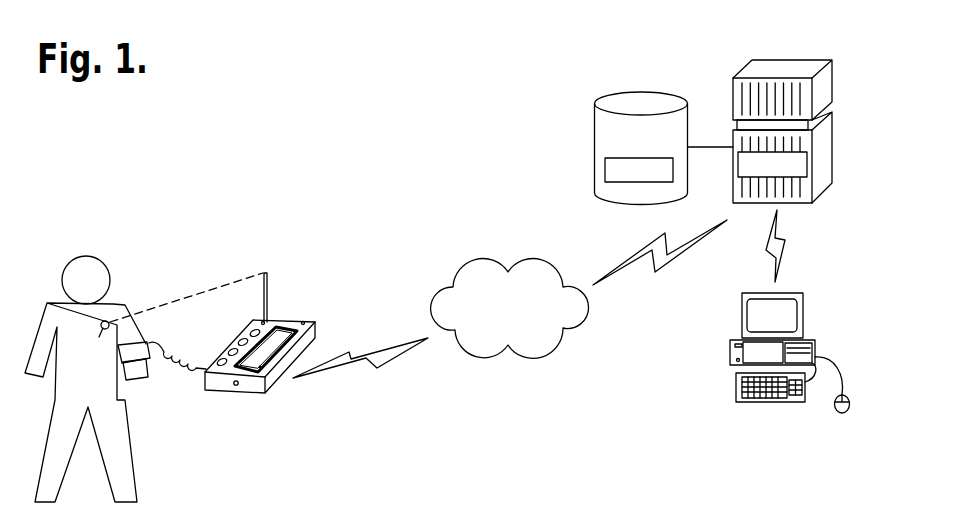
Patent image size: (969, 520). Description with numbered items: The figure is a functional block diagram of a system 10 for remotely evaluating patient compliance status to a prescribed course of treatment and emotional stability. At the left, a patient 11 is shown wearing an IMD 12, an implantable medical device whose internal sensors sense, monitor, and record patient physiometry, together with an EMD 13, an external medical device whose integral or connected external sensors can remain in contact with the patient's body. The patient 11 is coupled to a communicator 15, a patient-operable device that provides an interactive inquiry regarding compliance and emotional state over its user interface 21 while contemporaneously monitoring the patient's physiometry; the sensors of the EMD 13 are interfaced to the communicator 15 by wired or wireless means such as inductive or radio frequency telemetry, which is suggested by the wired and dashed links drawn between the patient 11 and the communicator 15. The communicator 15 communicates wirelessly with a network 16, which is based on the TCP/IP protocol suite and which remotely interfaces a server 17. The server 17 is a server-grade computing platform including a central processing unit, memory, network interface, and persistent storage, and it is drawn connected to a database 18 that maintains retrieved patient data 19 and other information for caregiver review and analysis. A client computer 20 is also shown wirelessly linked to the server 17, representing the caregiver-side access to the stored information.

The system 10 is at (150, 122).
The patient 11 is at (86, 256).
The implantable medical device (IMD) 12 is at (122, 305).
The external medical device (EMD) 13 is at (134, 381).
The communicator 15 is at (281, 355).
The network 16 is at (486, 258).
The server 17 is at (733, 80).
The database 18 is at (614, 155).
The patient data 19 is at (605, 177).
The client computer 20 is at (730, 352).
The user interface 21 is at (300, 338).